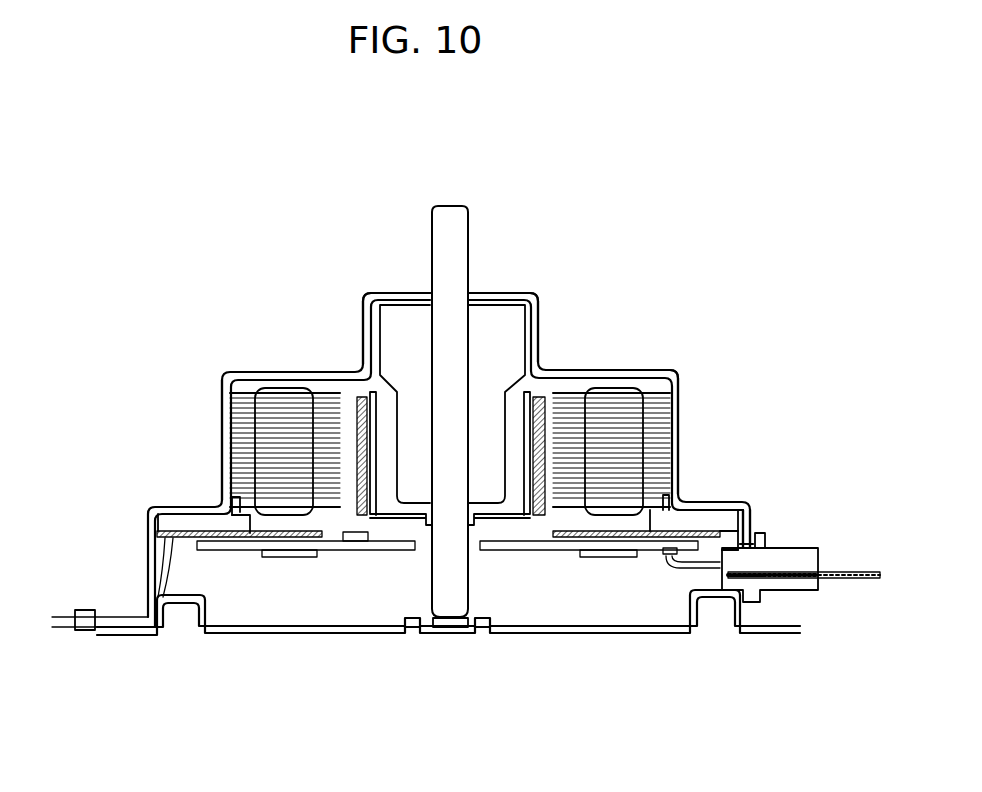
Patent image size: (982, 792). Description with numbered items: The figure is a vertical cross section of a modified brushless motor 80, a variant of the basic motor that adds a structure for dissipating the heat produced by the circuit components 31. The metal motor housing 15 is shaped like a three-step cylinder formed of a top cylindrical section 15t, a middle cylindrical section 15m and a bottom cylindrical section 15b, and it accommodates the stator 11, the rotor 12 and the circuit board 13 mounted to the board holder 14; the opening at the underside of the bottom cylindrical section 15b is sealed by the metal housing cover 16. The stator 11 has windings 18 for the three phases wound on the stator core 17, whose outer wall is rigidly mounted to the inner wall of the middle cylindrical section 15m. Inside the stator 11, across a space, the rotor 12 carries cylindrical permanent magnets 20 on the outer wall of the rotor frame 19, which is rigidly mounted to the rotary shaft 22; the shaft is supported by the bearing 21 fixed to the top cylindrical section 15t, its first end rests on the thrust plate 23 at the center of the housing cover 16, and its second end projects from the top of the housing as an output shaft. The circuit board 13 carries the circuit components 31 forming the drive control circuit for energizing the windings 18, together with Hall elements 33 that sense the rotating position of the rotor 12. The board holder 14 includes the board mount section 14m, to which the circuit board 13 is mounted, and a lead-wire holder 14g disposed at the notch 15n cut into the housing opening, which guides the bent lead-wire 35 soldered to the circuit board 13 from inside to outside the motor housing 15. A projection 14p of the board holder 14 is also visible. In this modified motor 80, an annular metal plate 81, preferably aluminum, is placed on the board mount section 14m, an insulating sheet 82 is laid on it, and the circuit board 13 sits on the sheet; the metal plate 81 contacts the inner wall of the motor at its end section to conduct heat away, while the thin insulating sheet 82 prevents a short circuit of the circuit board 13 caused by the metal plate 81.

The stator 11 is at (102, 343).
The rotor 12 is at (350, 200).
The circuit board 13 is at (237, 543).
The board holder 14 is at (176, 522).
The lead-wire holder 14g is at (790, 568).
The board mount section 14m is at (735, 521).
The projection 14p is at (232, 500).
The motor housing 15 is at (148, 572).
The bottom cylindrical section 15b is at (751, 522).
The middle cylindrical section 15m is at (680, 405).
The notch 15n is at (752, 548).
The top cylindrical section 15t is at (538, 327).
The housing cover 16 is at (115, 637).
The stator core 17 is at (240, 433).
The windings 18 is at (272, 393).
The rotor frame 19 is at (370, 390).
The permanent magnets 20 is at (358, 395).
The bearing 21 is at (510, 325).
The rotary shaft 22 is at (438, 262).
The thrust plate 23 is at (452, 622).
The circuit components 31 is at (277, 557).
The Hall elements 33 is at (355, 535).
The lead-wire 35 is at (835, 580).
The modified brushless motor 80 is at (673, 368).
The metal plate 81 is at (183, 538).
The insulating sheet 82 is at (258, 543).